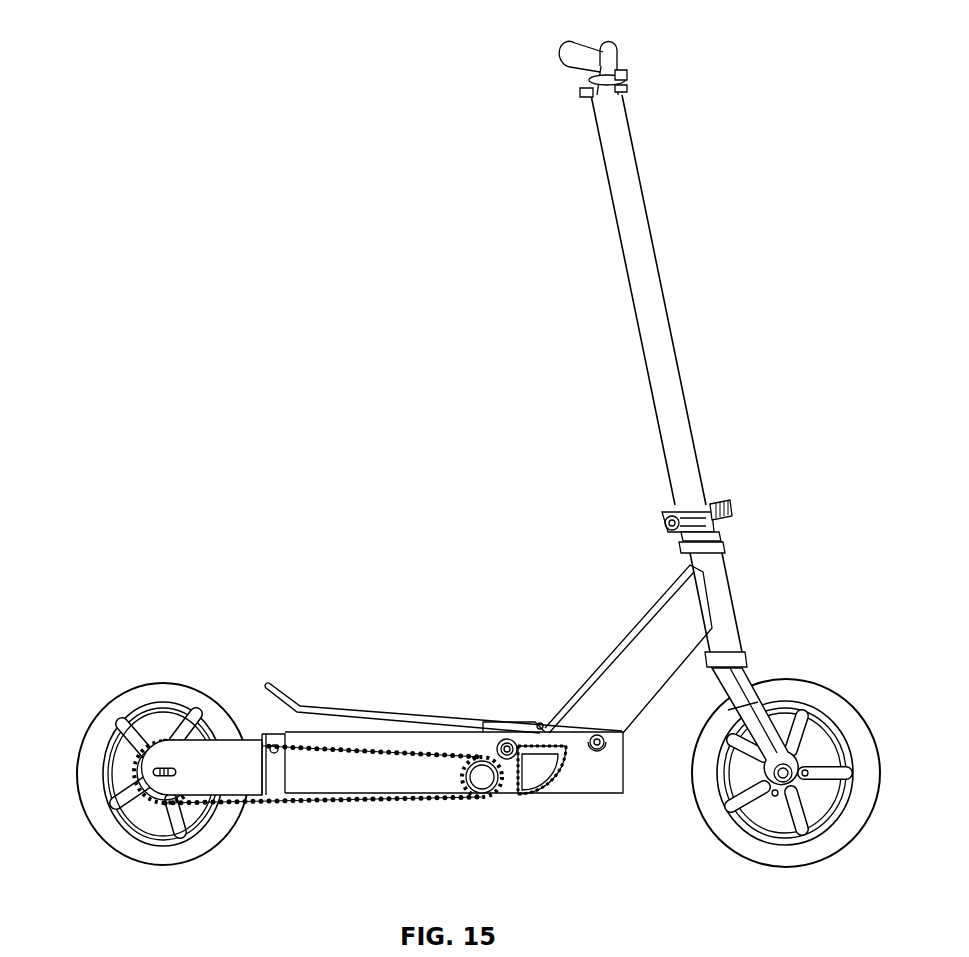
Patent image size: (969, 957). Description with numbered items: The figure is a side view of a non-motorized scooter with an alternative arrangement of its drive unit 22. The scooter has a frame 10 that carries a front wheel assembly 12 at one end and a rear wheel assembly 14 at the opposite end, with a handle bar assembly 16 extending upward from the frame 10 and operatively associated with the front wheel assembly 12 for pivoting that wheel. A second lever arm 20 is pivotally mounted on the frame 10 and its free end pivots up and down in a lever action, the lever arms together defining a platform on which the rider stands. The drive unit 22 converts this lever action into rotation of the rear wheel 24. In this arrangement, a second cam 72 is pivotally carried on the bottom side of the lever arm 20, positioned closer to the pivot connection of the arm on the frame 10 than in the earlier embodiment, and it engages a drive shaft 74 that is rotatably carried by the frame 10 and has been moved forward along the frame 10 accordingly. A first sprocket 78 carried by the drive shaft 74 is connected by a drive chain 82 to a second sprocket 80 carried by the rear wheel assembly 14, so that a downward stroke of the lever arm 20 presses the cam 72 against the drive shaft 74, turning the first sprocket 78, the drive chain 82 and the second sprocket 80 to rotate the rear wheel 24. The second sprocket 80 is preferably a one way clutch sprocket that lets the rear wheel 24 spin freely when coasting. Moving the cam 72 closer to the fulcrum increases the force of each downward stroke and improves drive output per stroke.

The frame 10 is at (640, 652).
The front wheel assembly 12 is at (818, 686).
The rear wheel assembly 14 is at (148, 680).
The handle bar assembly 16 is at (600, 35).
The second lever arm 20 is at (285, 692).
The drive unit 22 is at (512, 798).
The rear wheel 24 is at (203, 688).
The second cam 72 is at (552, 776).
The drive shaft 74 is at (498, 790).
The first sprocket 78 is at (452, 796).
The second sprocket 80 is at (138, 766).
The drive chain 82 is at (338, 810).